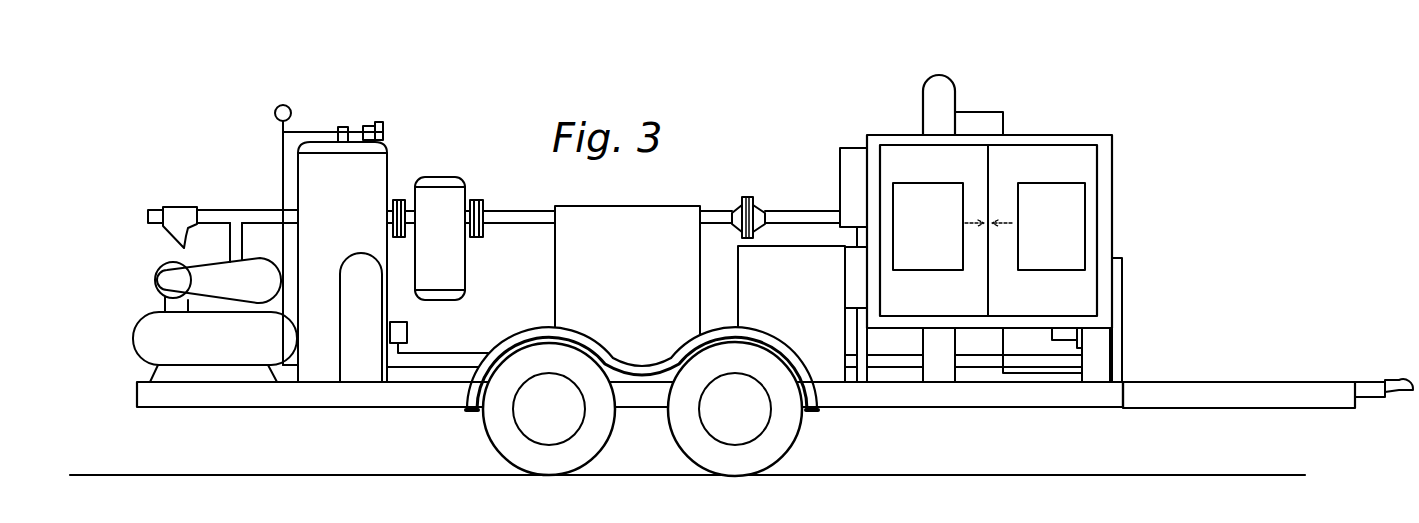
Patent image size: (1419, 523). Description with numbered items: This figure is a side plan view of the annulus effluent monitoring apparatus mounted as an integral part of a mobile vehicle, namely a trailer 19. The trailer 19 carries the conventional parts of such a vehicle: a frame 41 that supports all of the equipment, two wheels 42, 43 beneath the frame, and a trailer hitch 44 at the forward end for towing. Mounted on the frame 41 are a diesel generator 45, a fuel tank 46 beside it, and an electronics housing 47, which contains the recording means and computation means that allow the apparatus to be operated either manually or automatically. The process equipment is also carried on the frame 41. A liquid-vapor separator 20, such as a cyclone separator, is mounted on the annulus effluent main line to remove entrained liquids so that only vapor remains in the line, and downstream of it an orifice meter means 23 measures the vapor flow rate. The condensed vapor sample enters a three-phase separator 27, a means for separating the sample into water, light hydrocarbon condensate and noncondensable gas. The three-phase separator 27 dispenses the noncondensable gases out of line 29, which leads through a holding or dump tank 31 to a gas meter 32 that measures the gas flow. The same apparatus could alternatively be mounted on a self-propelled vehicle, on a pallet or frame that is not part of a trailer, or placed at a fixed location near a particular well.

The trailer 19 is at (1008, 228).
The liquid-vapor separator 20 is at (447, 177).
The orifice meter means 23 is at (748, 197).
The three-phase separator 27 is at (922, 110).
The line 29 is at (308, 131).
The holding or dump tank 31 is at (352, 195).
The gas meter 32 is at (275, 113).
The frame 41 is at (1020, 395).
The wheel 42 is at (500, 435).
The wheel 43 is at (783, 440).
The trailer hitch 44 is at (1375, 380).
The diesel generator 45 is at (640, 287).
The fuel tank 46 is at (803, 300).
The electronics housing 47 is at (1087, 165).